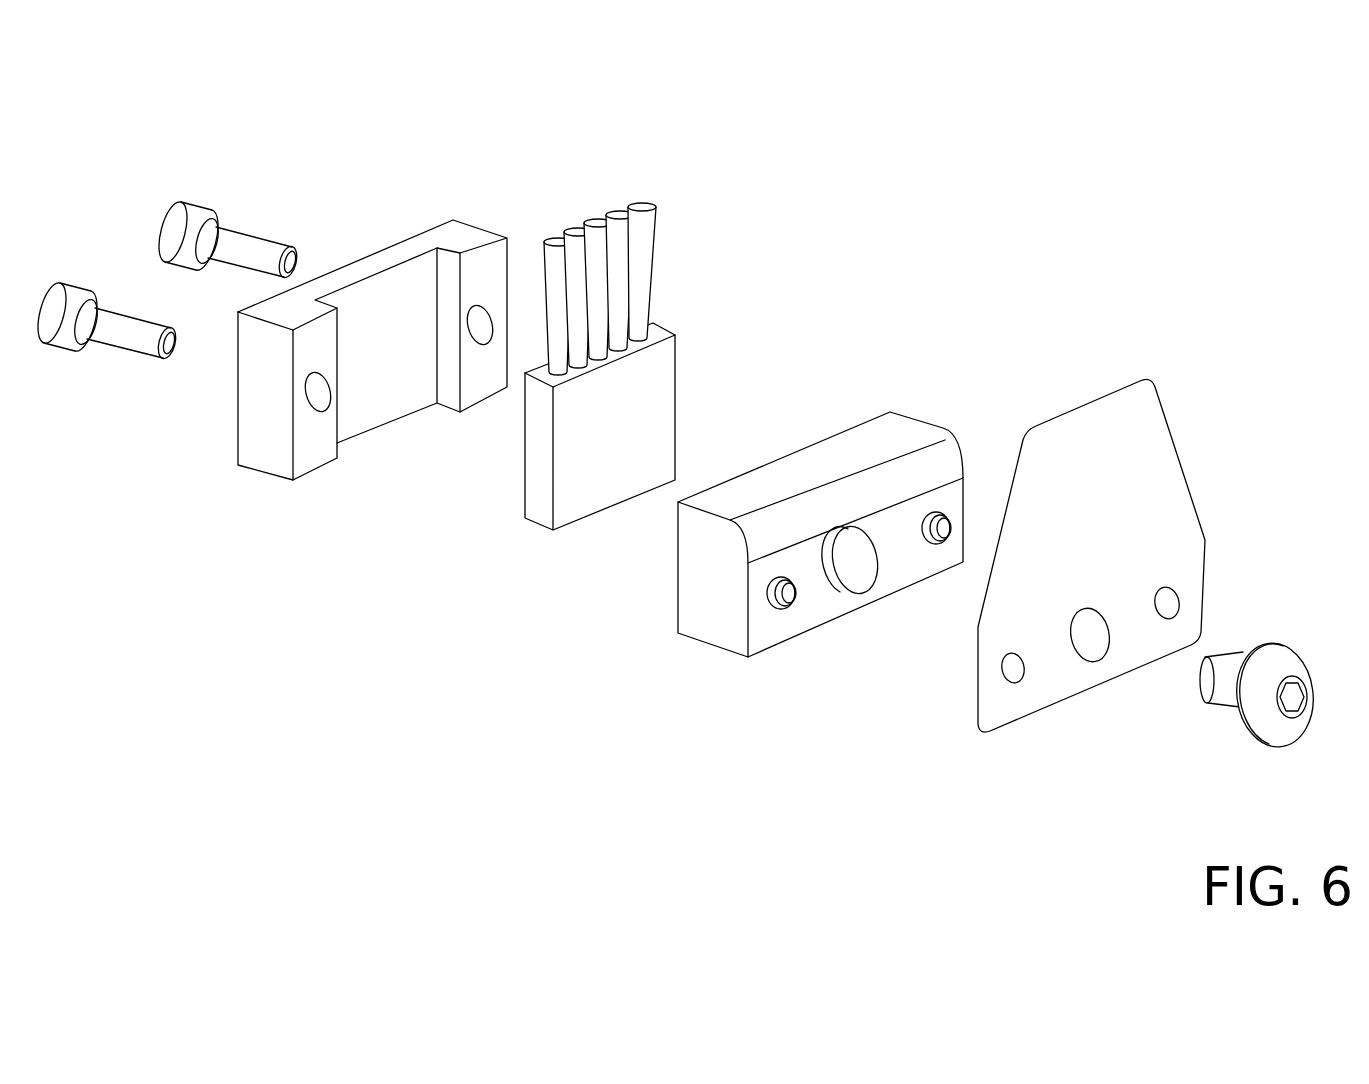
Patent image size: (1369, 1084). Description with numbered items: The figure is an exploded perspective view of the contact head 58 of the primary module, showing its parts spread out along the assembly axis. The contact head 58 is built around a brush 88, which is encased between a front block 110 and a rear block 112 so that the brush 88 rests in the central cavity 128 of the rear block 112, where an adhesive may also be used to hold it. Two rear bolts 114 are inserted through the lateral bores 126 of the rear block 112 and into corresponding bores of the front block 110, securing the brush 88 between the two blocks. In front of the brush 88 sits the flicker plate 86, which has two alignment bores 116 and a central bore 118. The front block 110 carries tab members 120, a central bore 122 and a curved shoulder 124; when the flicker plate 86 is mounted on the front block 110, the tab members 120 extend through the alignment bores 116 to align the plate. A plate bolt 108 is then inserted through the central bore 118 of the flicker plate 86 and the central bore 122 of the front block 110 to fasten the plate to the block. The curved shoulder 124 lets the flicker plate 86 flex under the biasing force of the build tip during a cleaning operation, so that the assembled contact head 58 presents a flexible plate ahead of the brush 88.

The contact head 58 is at (465, 638).
The flicker plate 86 is at (1135, 579).
The brush 88 is at (658, 383).
The plate bolt 108 is at (1278, 668).
The front block 110 is at (776, 534).
The rear block 112 is at (353, 338).
The rear bolts 114 is at (170, 228).
The alignment bores 116 is at (1180, 598).
The central bore 118 is at (1093, 657).
The tab members 120 is at (788, 607).
The central bore 122 is at (857, 583).
The curved shoulder 124 is at (878, 487).
The lateral bores 126 is at (335, 393).
The central cavity 128 is at (395, 375).